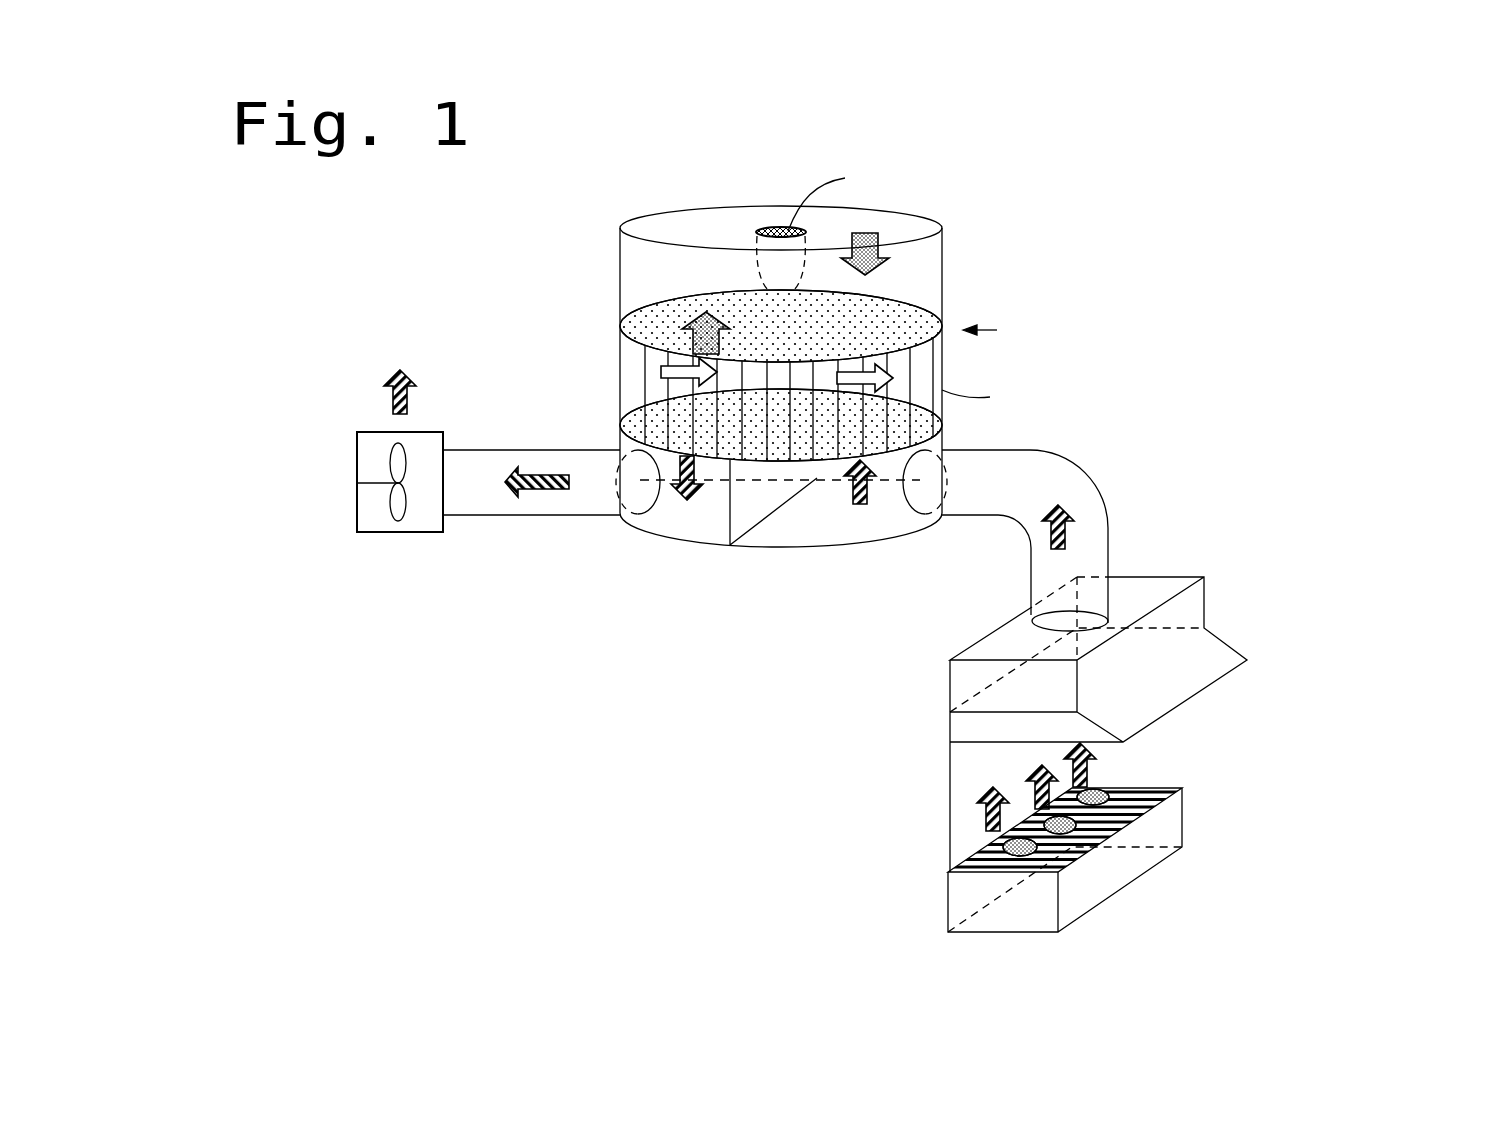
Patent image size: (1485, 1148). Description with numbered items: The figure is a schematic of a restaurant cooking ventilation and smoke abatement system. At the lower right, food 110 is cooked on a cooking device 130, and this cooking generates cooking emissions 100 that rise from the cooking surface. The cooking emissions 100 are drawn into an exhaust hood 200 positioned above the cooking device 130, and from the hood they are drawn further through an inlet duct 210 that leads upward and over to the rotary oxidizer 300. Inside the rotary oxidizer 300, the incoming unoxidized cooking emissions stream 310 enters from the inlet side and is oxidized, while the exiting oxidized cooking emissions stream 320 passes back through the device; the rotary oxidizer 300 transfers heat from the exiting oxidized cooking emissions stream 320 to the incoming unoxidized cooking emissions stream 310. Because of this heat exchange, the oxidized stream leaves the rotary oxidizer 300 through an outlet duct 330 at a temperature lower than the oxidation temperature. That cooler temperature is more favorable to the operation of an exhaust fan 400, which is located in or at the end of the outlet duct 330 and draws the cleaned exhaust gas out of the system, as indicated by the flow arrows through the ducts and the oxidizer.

The cooking emissions 100 is at (1102, 773).
The food 110 is at (1000, 848).
The cooking device 130 is at (1110, 829).
The exhaust hood 200 is at (1248, 660).
The inlet duct 210 is at (1088, 482).
The rotary oxidizer 300 is at (927, 381).
The incoming unoxidized cooking emissions stream 310 is at (858, 505).
The exiting oxidized cooking emissions stream 320 is at (682, 278).
The outlet duct 330 is at (556, 516).
The exhaust fan 400 is at (356, 456).